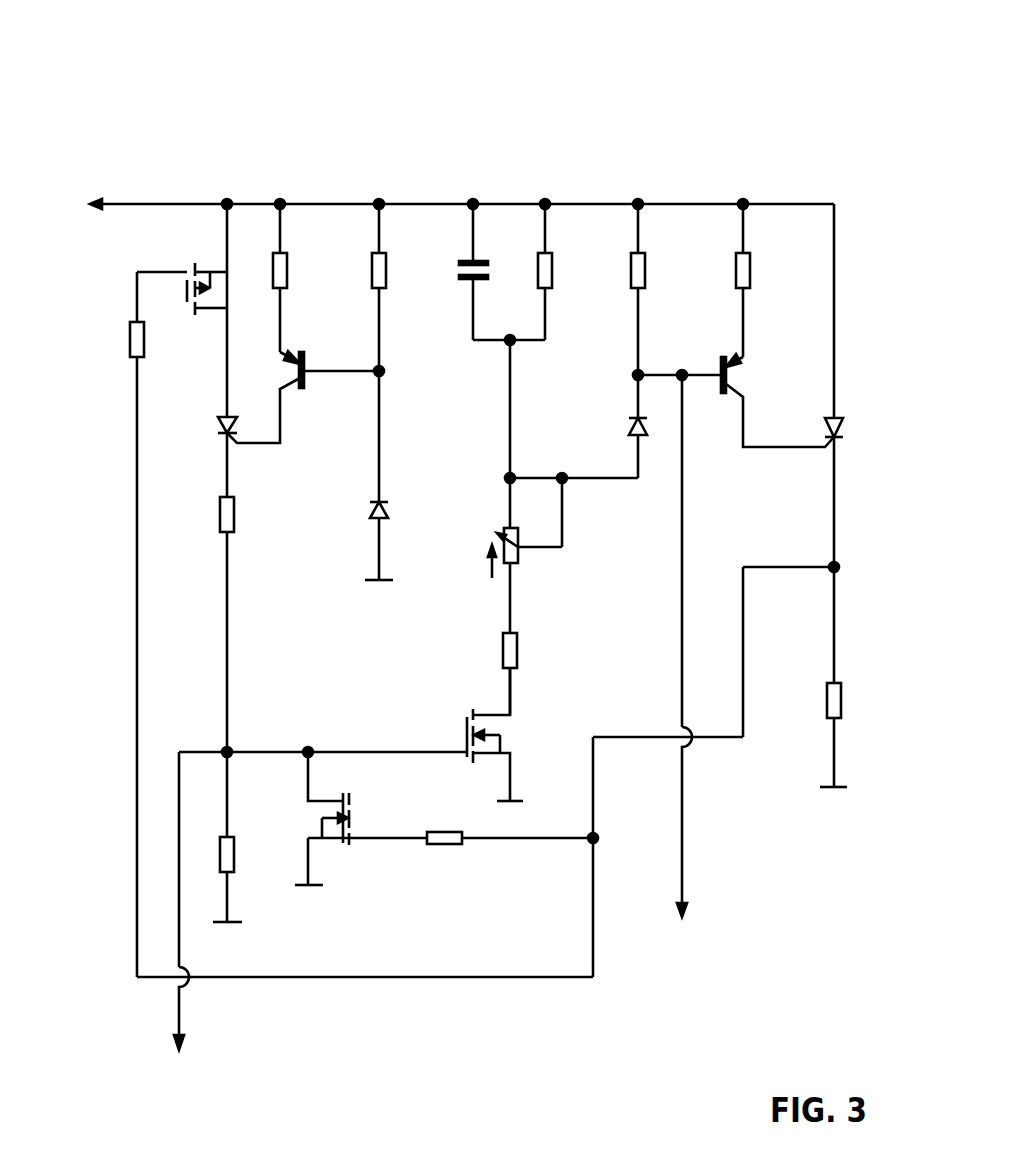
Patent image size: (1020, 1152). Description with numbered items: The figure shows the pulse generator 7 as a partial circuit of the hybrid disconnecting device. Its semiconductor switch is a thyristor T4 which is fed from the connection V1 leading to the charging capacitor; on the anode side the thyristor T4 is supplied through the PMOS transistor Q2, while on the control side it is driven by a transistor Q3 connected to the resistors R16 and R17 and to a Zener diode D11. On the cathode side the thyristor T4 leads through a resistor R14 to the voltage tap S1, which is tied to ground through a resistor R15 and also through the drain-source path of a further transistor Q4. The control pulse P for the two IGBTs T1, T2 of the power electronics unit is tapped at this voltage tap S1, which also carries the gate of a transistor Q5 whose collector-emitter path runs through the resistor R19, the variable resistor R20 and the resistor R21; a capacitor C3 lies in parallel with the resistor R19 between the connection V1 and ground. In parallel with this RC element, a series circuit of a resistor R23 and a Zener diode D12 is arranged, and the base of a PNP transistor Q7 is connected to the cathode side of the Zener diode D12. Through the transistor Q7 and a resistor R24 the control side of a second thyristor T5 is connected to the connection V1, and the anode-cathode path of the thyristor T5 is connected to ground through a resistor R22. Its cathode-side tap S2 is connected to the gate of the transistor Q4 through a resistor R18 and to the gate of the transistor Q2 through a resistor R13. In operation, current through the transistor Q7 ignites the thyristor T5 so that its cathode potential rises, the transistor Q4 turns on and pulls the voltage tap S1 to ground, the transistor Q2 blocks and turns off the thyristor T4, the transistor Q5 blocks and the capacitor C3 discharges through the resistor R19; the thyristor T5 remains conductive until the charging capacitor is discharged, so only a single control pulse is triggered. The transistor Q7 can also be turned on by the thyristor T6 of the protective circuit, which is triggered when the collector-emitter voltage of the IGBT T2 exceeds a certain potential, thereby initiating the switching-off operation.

The pulse generator 7 is at (528, 130).
The connection V1 is at (152, 204).
The control pulse P is at (179, 823).
The IGBT T1 is at (217, 1012).
The IGBT T2 is at (217, 1012).
The PMOS transistor Q2 is at (182, 310).
The resistor R13 is at (113, 314).
The resistor R16 is at (306, 278).
The resistor R17 is at (405, 353).
The capacitor C3 is at (502, 274).
The resistor R19 is at (571, 272).
The resistor R23 is at (664, 311).
The resistor R24 is at (769, 280).
The PMOS transistor Q3 is at (303, 385).
The thyristor T4 is at (207, 454).
The resistor R14 is at (255, 624).
The Zener diode D11 is at (404, 537).
The Zener diode D12 is at (576, 448).
The variable resistor R20 is at (525, 486).
The resistor R21 is at (536, 674).
The transistor Q5 is at (474, 734).
The voltage tap S1 is at (227, 752).
The resistor R15 is at (250, 837).
The transistor Q4 is at (340, 818).
The resistor R18 is at (546, 857).
The PNP transistor Q7 is at (736, 400).
The thyristor T5 is at (852, 385).
The cathode-side tap S2 is at (834, 567).
The resistor R22 is at (858, 677).
The thyristor T6 is at (702, 648).